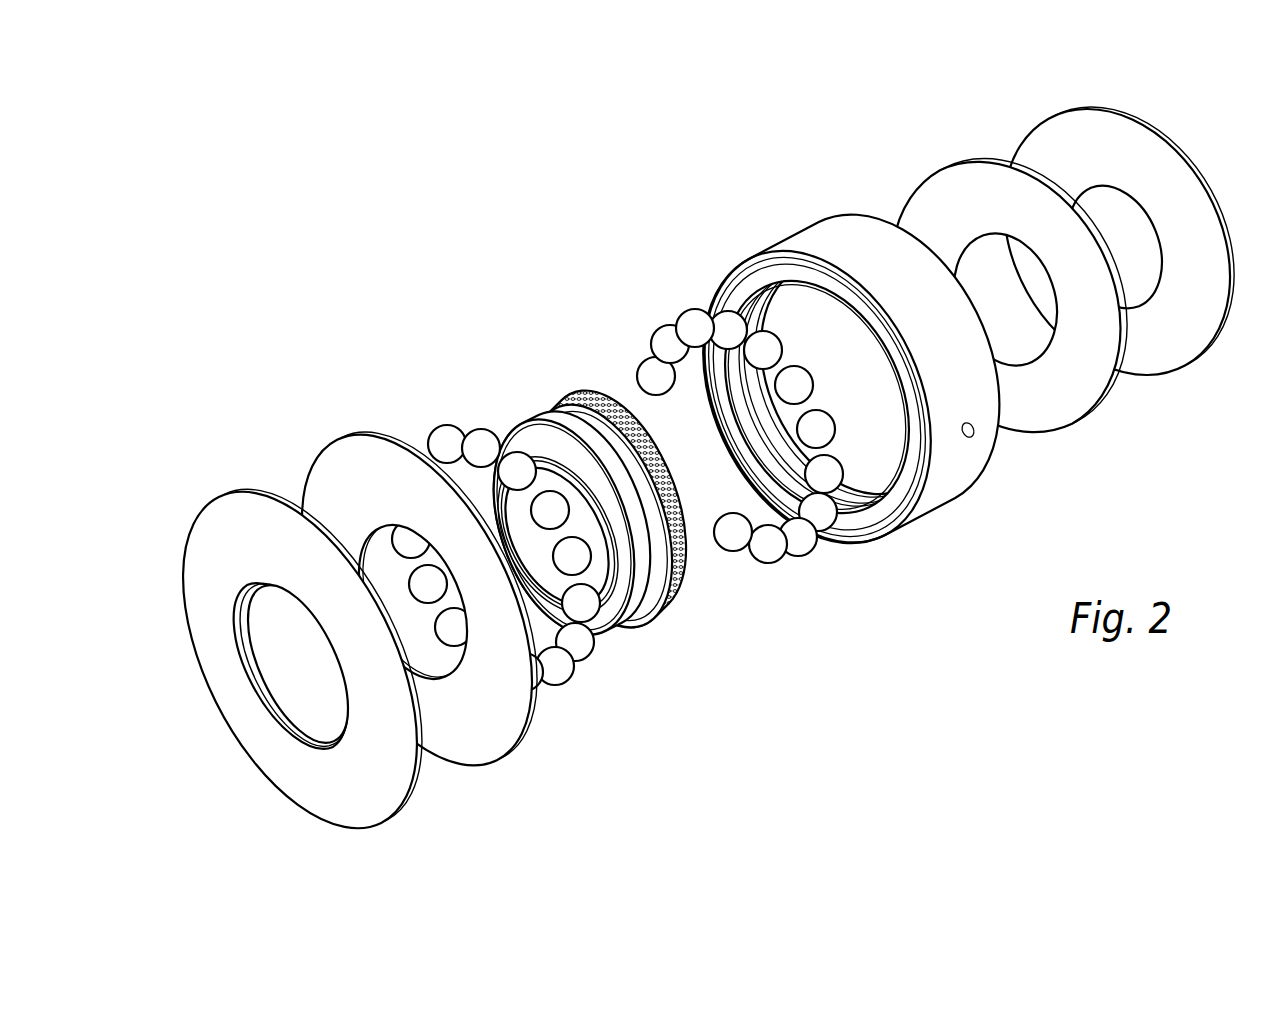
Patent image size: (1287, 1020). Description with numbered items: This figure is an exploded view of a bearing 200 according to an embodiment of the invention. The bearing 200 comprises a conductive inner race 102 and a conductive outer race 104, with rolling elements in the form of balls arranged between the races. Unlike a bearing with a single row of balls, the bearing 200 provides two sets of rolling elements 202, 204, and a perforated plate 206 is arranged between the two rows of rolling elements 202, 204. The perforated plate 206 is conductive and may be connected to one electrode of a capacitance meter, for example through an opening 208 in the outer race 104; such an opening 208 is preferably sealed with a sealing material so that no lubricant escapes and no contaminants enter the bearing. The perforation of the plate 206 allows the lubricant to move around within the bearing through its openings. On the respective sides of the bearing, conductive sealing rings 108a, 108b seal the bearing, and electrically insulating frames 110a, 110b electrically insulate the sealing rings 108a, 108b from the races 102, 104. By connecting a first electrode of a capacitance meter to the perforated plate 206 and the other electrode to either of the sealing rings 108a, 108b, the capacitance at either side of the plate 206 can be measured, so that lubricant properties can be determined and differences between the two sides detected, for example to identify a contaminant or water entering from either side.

The bearing 200 is at (410, 248).
The inner race 102 is at (610, 386).
The outer race 104 is at (864, 374).
The sealing ring 108a is at (217, 513).
The sealing ring 108b is at (1145, 148).
The electrically insulating frame 110a is at (333, 468).
The electrically insulating frame 110b is at (933, 196).
The set of rolling elements 202 is at (440, 440).
The set of rolling elements 204 is at (685, 324).
The perforated plate 206 is at (537, 390).
The opening 208 is at (975, 438).